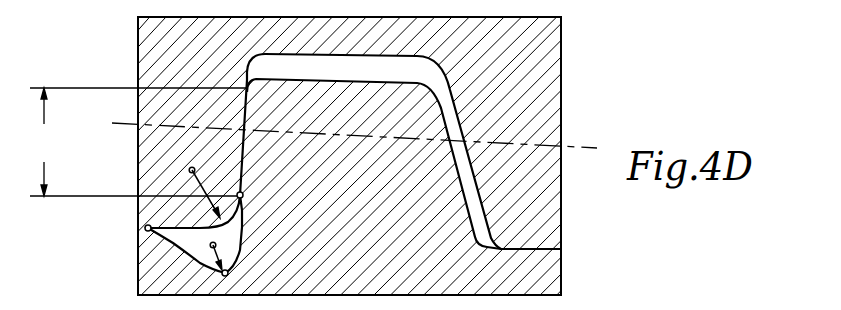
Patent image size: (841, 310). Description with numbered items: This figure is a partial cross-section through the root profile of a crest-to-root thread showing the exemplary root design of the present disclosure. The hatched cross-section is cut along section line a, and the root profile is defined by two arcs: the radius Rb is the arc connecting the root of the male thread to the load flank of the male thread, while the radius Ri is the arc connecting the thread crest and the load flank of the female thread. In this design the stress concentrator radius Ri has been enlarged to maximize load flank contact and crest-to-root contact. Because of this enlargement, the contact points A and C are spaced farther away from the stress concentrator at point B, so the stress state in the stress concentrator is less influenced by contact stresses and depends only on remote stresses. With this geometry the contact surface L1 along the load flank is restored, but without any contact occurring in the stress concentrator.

The contact point A is at (250, 196).
The point B is at (238, 279).
The contact point C is at (152, 244).
The stress concentrator radius Ri is at (240, 178).
The radius of the root arc Rb is at (228, 250).
The contact surface L1 is at (138, 142).
The section line a- a is at (355, 135).